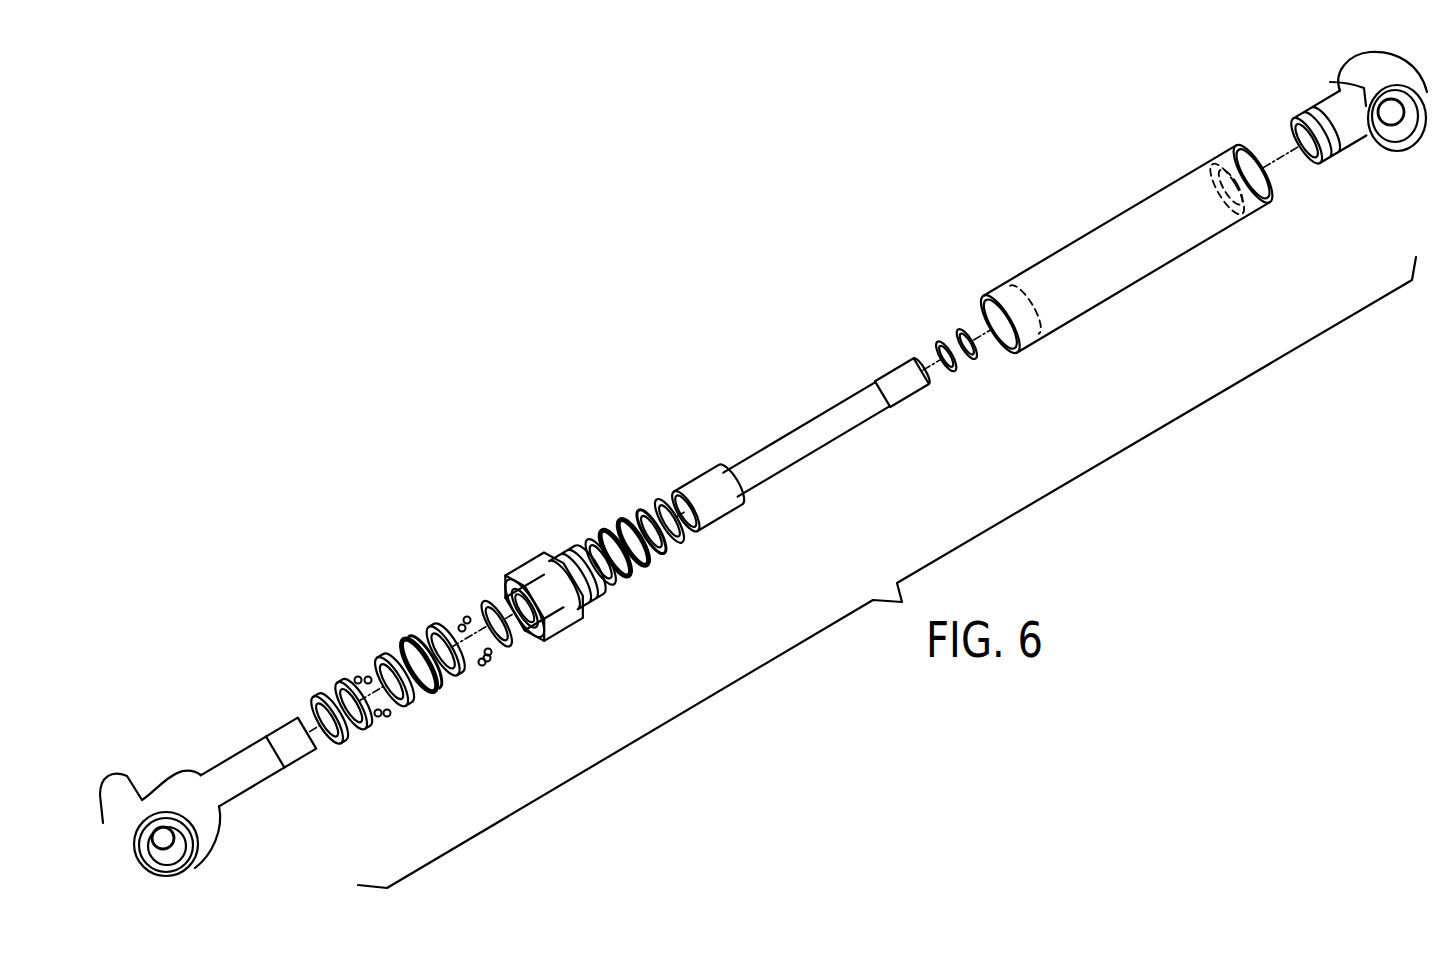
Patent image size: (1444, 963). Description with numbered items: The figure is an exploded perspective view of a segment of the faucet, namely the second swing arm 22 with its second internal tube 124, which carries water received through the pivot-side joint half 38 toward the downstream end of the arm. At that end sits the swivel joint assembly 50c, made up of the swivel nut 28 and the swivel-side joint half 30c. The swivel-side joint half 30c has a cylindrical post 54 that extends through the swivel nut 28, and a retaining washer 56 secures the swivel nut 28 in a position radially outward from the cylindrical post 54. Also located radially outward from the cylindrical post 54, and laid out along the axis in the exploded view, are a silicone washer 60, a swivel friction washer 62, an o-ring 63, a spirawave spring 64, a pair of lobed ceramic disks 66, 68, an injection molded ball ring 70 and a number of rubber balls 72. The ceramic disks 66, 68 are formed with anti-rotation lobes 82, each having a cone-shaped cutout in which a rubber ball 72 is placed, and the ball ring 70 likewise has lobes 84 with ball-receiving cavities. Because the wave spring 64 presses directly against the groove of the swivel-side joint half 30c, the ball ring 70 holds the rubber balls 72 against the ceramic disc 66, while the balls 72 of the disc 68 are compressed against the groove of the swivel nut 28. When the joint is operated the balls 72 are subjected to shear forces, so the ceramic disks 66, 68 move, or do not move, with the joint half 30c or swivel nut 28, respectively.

The swivel-side joint half 30c is at (187, 790).
The cylindrical post 54 is at (238, 767).
The spirawave spring 64 is at (342, 750).
The injection molded ball ring 70 is at (368, 733).
The lobes 84 is at (337, 680).
The rubber balls 72 is at (368, 677).
The lobed ceramic disk 66 is at (424, 712).
The lobed ceramic disk 68 is at (467, 672).
The anti-rotation lobes 82 is at (478, 660).
The o-ring 63 is at (509, 647).
The swivel nut 28 is at (570, 616).
The swivel joint assembly 50c is at (531, 512).
The swivel friction washer 62 is at (608, 535).
The retaining washer 56 is at (647, 520).
The silicone washer 60 is at (647, 563).
The second internal tube 124 is at (860, 415).
The second swing arm 22 is at (1115, 240).
The pivot-side joint half 38 is at (1397, 70).